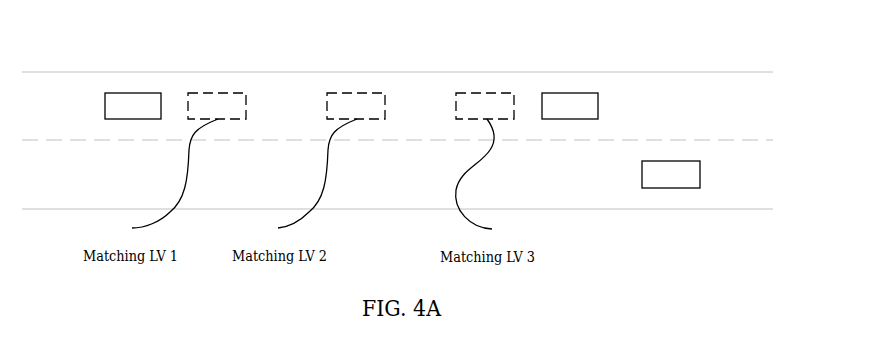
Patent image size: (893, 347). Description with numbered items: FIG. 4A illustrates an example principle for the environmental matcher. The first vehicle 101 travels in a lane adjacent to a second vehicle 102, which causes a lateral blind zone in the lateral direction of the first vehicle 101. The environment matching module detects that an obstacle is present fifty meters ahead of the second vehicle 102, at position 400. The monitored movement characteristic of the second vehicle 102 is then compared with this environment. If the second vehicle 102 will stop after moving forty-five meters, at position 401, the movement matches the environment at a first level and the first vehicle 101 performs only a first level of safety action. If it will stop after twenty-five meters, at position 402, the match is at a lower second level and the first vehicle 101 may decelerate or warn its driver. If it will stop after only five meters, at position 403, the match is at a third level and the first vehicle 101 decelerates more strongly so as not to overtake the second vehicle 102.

The obstacle position 400 is at (134, 93).
The first stop position 401 is at (216, 93).
The second stop position 402 is at (357, 93).
The third stop position 403 is at (488, 93).
The second vehicle 102 is at (605, 47).
The first vehicle 101 is at (671, 174).